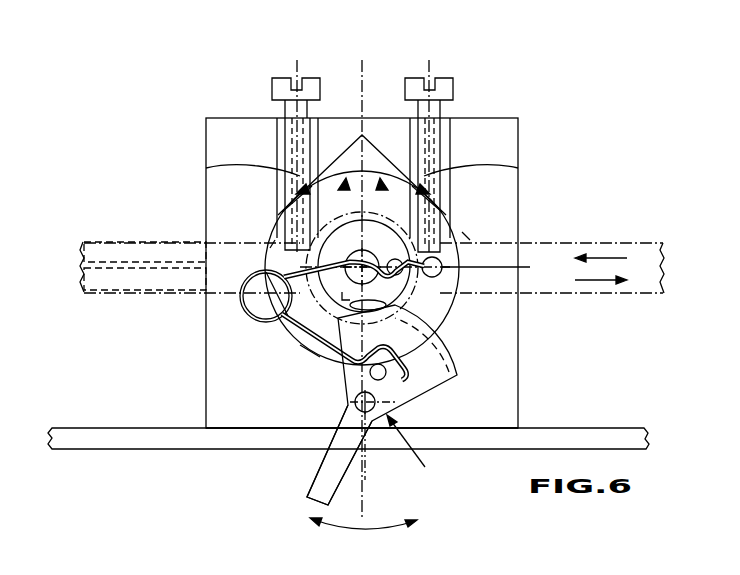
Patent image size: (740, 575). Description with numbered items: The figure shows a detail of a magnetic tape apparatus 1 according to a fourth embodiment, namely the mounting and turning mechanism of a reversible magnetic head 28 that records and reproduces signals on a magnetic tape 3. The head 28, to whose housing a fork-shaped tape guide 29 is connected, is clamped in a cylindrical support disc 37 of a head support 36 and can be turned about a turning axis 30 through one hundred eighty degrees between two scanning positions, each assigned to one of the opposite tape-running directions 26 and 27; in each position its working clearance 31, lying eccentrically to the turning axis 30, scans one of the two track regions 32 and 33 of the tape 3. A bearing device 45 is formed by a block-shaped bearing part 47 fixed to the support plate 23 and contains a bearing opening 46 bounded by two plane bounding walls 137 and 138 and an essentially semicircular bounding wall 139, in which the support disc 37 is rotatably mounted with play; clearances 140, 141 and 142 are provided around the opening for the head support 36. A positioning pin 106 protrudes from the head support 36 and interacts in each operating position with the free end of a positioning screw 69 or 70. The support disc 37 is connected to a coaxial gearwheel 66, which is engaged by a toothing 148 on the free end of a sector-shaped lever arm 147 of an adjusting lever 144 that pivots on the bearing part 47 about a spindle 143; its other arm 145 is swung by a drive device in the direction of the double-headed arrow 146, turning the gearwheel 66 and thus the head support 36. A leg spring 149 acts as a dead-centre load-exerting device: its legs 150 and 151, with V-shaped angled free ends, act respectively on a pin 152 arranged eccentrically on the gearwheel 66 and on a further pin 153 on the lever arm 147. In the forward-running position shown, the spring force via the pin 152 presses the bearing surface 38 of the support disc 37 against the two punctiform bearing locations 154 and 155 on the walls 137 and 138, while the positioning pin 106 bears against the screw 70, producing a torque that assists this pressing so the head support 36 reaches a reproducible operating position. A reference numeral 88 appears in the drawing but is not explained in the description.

The magnetic tape apparatus 1 is at (112, 403).
The magnetic tape 3 is at (662, 252).
The support plate 23 is at (150, 449).
The tape-running direction 26 is at (592, 282).
The tape-running direction 27 is at (606, 256).
The magnetic head 28 is at (326, 211).
The fork-shaped tape guide 29 is at (402, 211).
The turning axis 30 is at (355, 289).
The working clearance 31 is at (373, 310).
The track region 32 is at (90, 290).
The track region 33 is at (90, 242).
The head support 36 is at (302, 186).
The support disc 37 is at (341, 188).
The bearing surface 38 is at (380, 188).
The bearing device 45 is at (522, 134).
The bearing opening 46 is at (424, 186).
The bearing part 47 is at (490, 205).
The gearwheel 66 is at (294, 338).
The positioning screw 69 is at (272, 88).
The positioning screw 70 is at (453, 88).
The bracket 88 is at (350, 309).
The positioning pin 106 is at (505, 266).
The plane bounding wall 137 is at (318, 190).
The plane bounding wall 138 is at (414, 190).
The semicircular bounding wall 139 is at (457, 297).
The clearance 140 is at (270, 248).
The clearance 141 is at (360, 132).
The clearance 142 is at (505, 223).
The spindle 143 is at (369, 414).
The adjusting lever 144 is at (455, 484).
The arm 145 is at (318, 478).
The double-headed arrow 146 is at (362, 528).
The lever arm 147 is at (456, 376).
The toothing 148 is at (452, 350).
The leg spring 149 is at (240, 319).
The leg 150 is at (290, 264).
The leg 151 is at (303, 348).
The pin 152 is at (458, 285).
The pin 153 is at (394, 380).
The bearing location 154 is at (296, 173).
The bearing location 155 is at (438, 173).